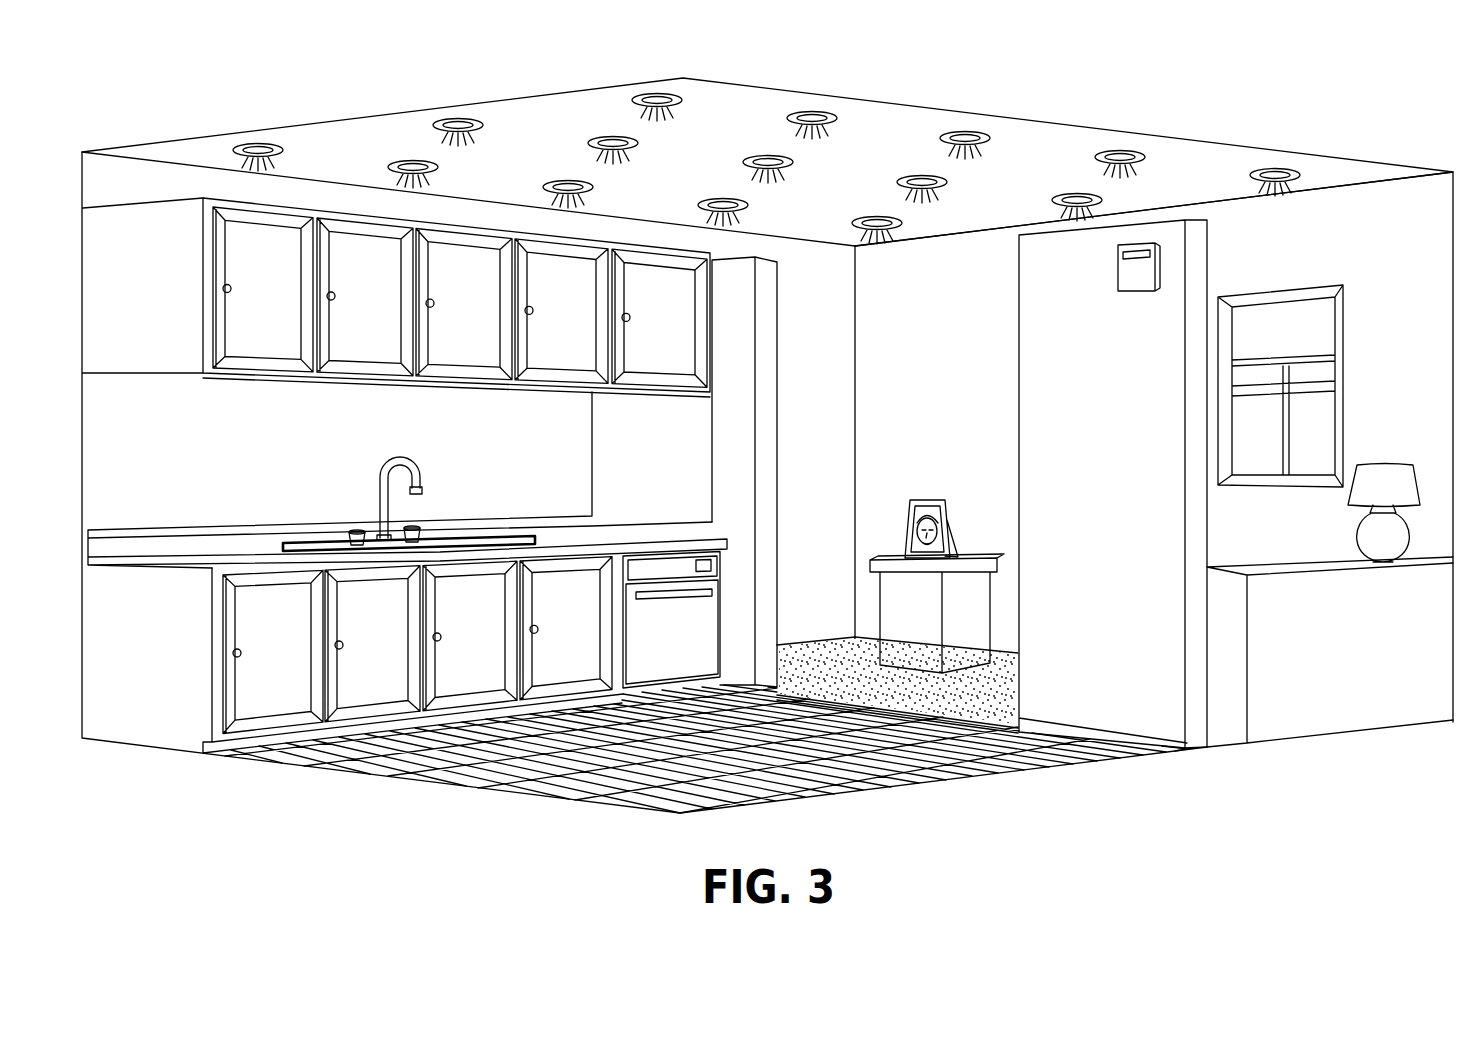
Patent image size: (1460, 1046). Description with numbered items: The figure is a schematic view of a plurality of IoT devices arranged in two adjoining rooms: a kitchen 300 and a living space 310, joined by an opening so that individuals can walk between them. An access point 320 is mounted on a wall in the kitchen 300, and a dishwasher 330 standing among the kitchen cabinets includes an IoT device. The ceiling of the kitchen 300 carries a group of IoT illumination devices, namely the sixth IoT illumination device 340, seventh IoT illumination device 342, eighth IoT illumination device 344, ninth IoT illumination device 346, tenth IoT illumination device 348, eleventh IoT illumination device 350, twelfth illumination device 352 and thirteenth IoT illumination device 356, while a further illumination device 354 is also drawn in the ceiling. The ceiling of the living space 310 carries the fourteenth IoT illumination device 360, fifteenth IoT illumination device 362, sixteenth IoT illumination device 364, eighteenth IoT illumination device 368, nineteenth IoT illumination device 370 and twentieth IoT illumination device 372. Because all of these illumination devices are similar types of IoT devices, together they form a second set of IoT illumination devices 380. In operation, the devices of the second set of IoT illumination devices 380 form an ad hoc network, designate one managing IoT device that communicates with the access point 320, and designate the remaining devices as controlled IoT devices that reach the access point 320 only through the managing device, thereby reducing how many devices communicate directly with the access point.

The kitchen 300 is at (150, 192).
The living space 310 is at (1342, 220).
The access point 320 is at (1130, 277).
The dishwasher 330 is at (698, 639).
The sixth IoT illumination device 340 is at (258, 142).
The seventh IoT illumination device 342 is at (392, 165).
The eighth IoT illumination device 344 is at (459, 119).
The ninth IoT illumination device 346 is at (548, 186).
The tenth IoT illumination device 348 is at (636, 145).
The eleventh IoT illumination device 350 is at (657, 94).
The twelfth illumination device 352 is at (700, 203).
The light fixture 354 is at (768, 156).
The thirteenth IoT illumination device 356 is at (813, 112).
The fourteenth IoT illumination device 360 is at (855, 223).
The fifteenth IoT illumination device 362 is at (921, 175).
The sixteenth IoT illumination device 364 is at (966, 131).
The eighteenth IoT illumination device 368 is at (1055, 198).
The nineteenth IoT illumination device 370 is at (1120, 150).
The twentieth IoT illumination device 372 is at (1276, 168).
The second set of IoT illumination devices 380 is at (608, 125).